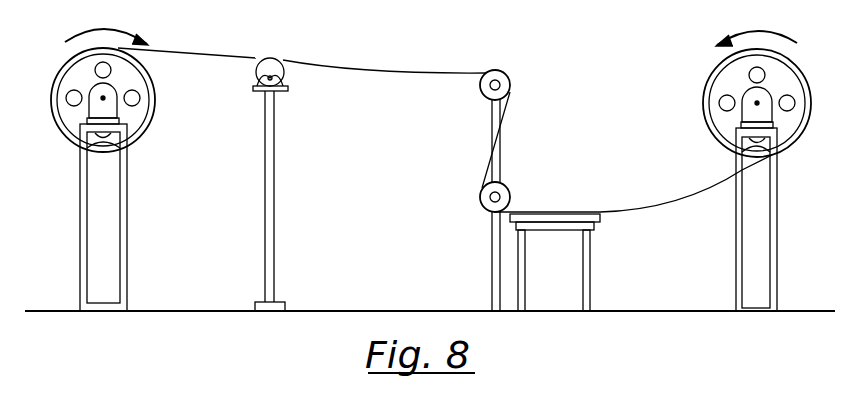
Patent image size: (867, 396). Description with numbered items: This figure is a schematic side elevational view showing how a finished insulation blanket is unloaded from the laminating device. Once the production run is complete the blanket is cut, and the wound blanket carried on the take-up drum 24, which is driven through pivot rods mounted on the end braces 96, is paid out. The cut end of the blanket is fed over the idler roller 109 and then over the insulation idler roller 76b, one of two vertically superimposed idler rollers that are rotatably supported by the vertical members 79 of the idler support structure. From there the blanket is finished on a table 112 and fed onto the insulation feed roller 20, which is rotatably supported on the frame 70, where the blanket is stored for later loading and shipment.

The take-up drum 24 is at (130, 82).
The end brace 96 is at (126, 228).
The idler roller 109 is at (270, 60).
The insulation idler roller 76b is at (497, 72).
The vertical member 79 is at (490, 120).
The table 112 is at (598, 228).
The insulation feed roller 20 is at (730, 85).
The frame 70 is at (777, 228).